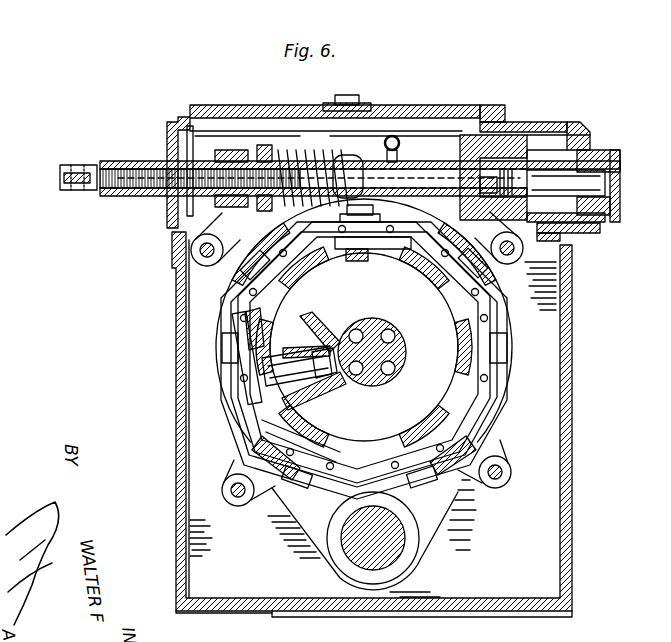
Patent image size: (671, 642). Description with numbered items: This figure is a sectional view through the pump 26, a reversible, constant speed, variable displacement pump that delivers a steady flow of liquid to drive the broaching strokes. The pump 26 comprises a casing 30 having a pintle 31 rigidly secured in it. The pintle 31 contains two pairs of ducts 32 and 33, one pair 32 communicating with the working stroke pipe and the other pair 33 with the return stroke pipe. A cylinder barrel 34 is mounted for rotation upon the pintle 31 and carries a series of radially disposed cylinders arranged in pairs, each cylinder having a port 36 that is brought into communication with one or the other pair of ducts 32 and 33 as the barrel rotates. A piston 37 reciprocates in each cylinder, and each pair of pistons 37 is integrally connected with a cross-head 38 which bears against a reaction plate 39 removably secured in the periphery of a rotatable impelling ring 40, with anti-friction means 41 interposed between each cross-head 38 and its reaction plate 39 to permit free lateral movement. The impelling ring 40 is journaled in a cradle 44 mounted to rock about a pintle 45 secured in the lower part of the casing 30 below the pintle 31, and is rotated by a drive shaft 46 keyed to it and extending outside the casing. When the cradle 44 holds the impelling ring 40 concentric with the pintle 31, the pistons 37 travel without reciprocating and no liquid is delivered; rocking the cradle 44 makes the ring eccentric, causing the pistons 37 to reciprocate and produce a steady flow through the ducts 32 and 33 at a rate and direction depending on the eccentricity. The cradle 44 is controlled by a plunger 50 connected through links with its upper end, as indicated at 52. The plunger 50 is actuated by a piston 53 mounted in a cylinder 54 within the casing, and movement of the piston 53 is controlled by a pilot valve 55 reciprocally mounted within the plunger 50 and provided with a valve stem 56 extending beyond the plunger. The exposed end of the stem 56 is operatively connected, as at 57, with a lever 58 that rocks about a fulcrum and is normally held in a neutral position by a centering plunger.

The pump 26 is at (572, 345).
The casing 30 is at (574, 428).
The pintle 31 is at (376, 328).
The ducts 32 is at (355, 330).
The ducts 33 is at (357, 372).
The cylinder barrel 34 is at (448, 352).
The port 36 is at (328, 350).
The piston 37 is at (247, 403).
The cross-head 38 is at (270, 327).
The reaction plate 39 is at (246, 400).
The impelling ring 40 is at (508, 365).
The anti-friction means 41 is at (272, 374).
The cradle 44 is at (440, 516).
The pintle 45 is at (352, 556).
The drive shaft 46 is at (670, 362).
The plunger 50 is at (432, 162).
The connection of links to cradle 52 is at (342, 166).
The piston 53 is at (548, 142).
The cylinder 54 is at (505, 134).
The pilot valve 55 is at (562, 180).
The valve stem 56 is at (102, 160).
The operative connection 57 is at (75, 166).
The lever 58 is at (60, 177).